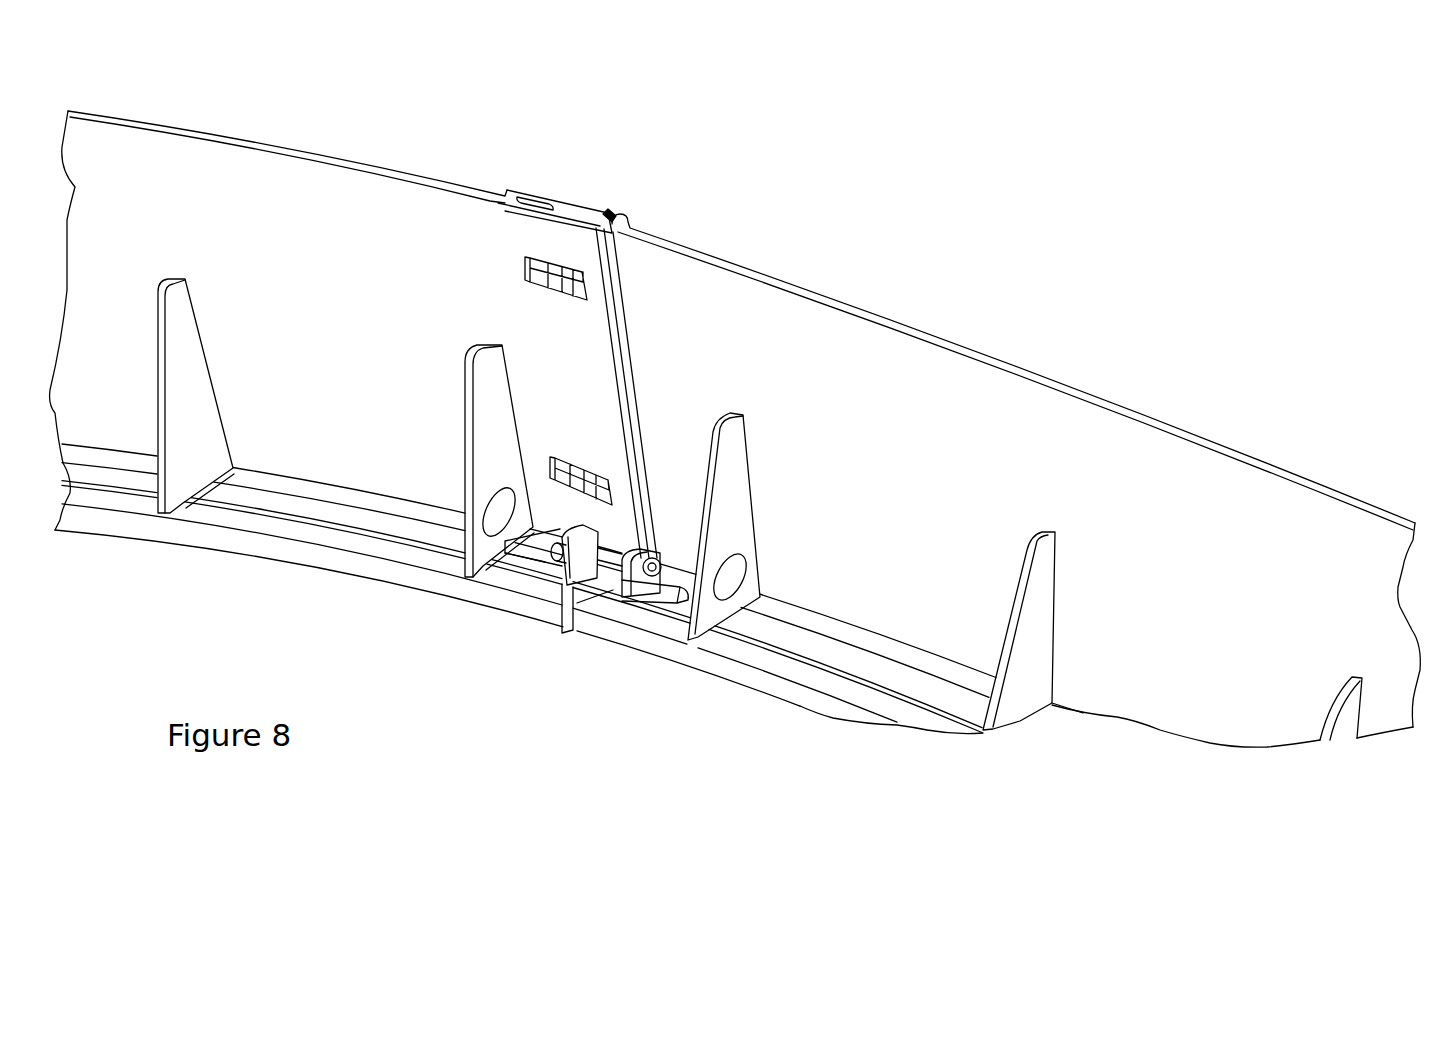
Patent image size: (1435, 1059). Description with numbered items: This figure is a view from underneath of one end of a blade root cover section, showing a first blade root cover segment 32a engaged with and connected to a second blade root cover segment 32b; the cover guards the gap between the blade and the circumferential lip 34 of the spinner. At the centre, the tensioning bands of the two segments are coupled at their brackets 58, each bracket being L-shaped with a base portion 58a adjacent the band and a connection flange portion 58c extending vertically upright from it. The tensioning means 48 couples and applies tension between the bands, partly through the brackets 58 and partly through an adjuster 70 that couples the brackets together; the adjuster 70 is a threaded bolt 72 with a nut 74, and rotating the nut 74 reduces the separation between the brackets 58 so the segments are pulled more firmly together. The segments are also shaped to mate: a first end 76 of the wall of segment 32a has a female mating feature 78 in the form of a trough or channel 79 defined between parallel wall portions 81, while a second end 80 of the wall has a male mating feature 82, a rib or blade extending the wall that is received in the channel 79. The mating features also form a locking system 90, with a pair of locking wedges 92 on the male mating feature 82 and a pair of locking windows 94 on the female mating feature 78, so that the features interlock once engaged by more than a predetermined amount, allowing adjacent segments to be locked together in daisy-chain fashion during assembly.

The first blade root cover segment 32a is at (342, 186).
The second blade root cover segment 32b is at (818, 330).
The circumferential lip 34 is at (508, 430).
The tensioning means 48 is at (848, 653).
The bracket 58 is at (620, 600).
The base portion 58a is at (653, 607).
The connection flange portion 58c is at (545, 575).
The adjuster 70 is at (692, 535).
The threaded bolt 72 is at (630, 543).
The nut 74 is at (700, 566).
The first end 76 is at (563, 190).
The female mating feature 78 is at (628, 176).
The trough or channel 79 is at (540, 212).
The second end 80 is at (680, 268).
The parallel wall portions 81 is at (596, 205).
The male mating feature 82 is at (612, 216).
The locking system 90 is at (610, 306).
The locking wedges 92 is at (590, 293).
The locking windows 94 is at (547, 292).